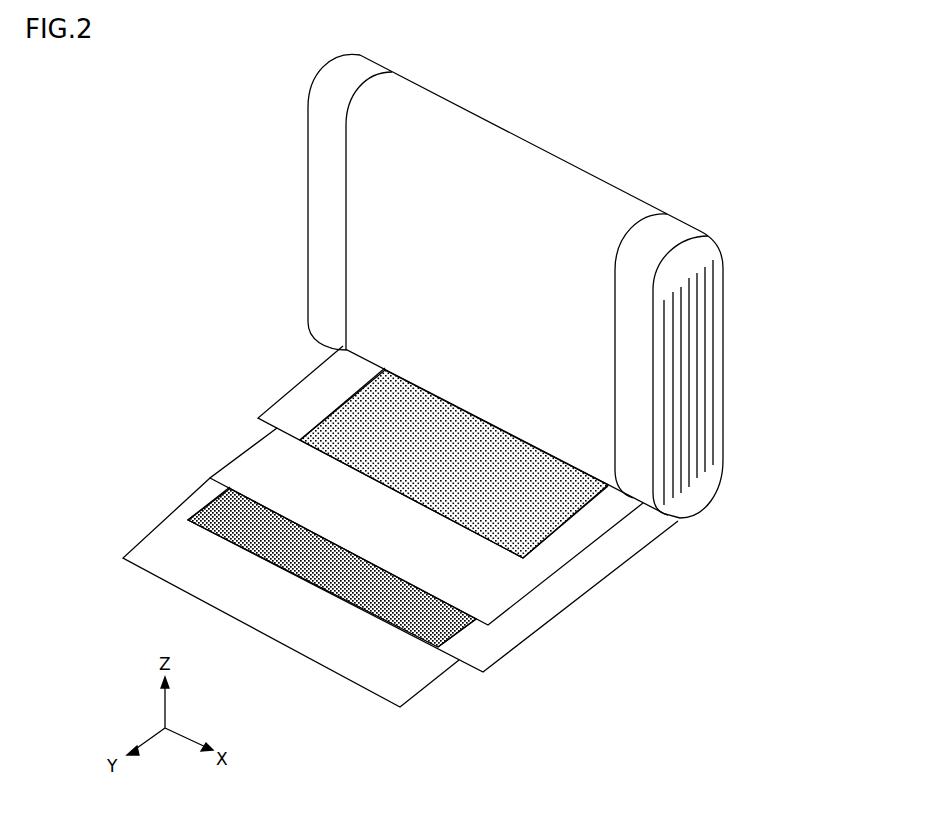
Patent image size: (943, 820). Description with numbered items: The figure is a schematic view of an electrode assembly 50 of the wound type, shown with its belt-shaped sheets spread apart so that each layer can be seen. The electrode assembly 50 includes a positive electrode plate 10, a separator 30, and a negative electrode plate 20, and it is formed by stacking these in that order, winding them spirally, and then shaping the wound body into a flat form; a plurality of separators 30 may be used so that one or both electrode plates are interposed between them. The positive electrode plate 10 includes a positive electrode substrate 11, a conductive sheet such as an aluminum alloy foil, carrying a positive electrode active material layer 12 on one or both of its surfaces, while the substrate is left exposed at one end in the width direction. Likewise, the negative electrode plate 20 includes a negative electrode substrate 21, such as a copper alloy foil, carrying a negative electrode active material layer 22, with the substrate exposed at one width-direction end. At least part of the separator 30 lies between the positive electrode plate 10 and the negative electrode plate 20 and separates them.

The electrode assembly 50 is at (699, 165).
The positive electrode plate 10 is at (228, 336).
The positive electrode substrate 11 is at (337, 380).
The positive electrode active material layer 12 is at (350, 425).
The negative electrode plate 20 is at (620, 720).
The negative electrode substrate 21 is at (550, 602).
The negative electrode active material layer 22 is at (410, 610).
The separator 30 is at (176, 552).